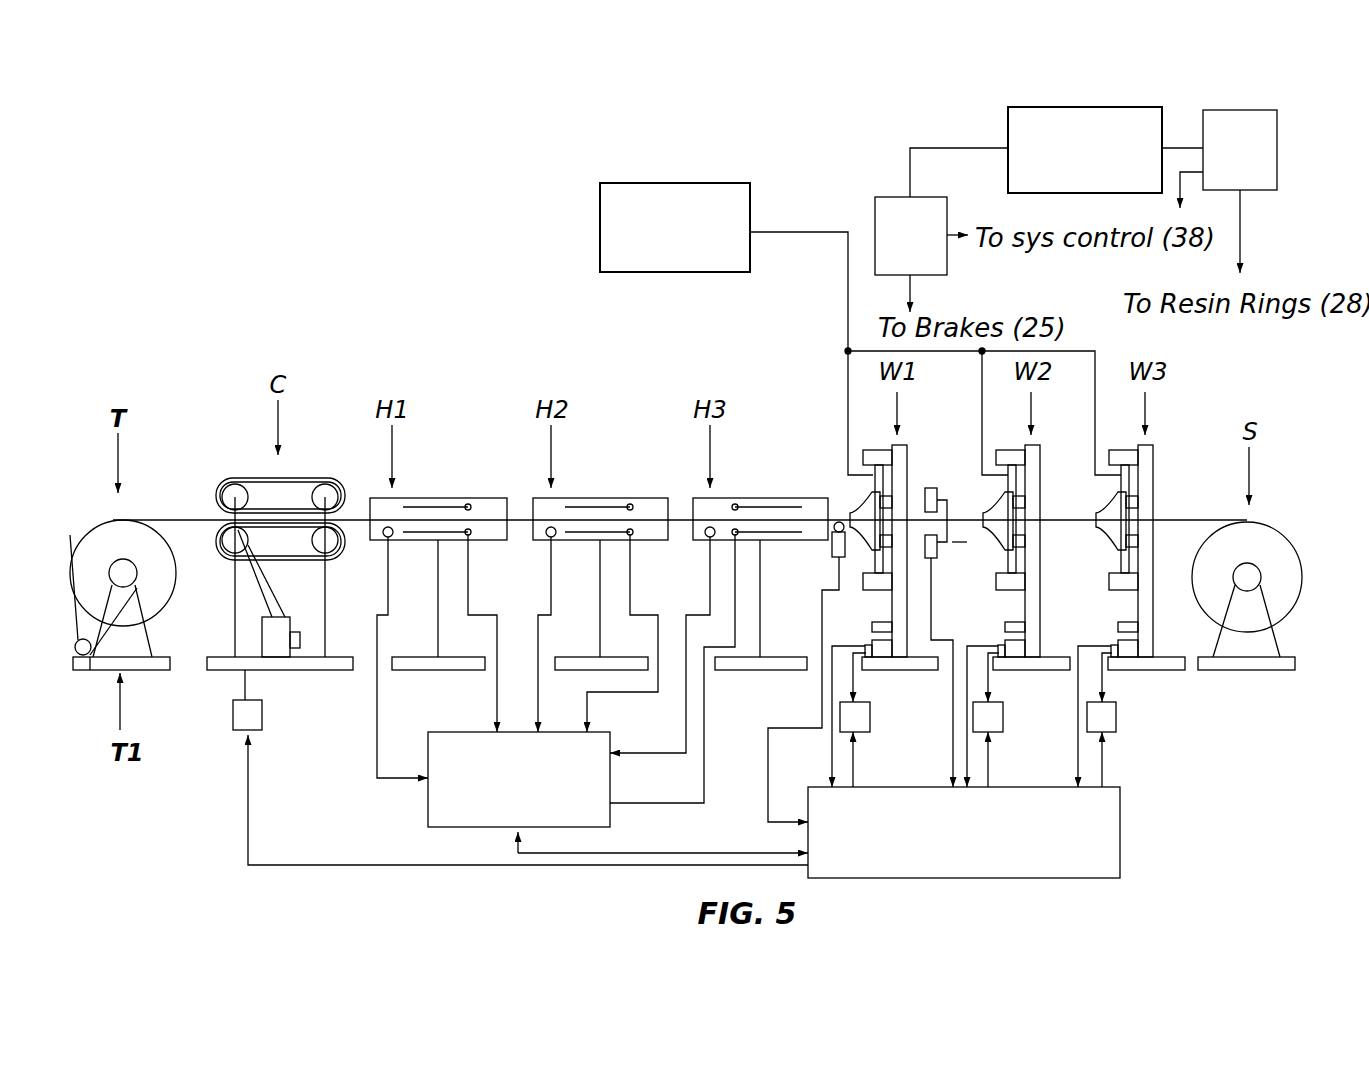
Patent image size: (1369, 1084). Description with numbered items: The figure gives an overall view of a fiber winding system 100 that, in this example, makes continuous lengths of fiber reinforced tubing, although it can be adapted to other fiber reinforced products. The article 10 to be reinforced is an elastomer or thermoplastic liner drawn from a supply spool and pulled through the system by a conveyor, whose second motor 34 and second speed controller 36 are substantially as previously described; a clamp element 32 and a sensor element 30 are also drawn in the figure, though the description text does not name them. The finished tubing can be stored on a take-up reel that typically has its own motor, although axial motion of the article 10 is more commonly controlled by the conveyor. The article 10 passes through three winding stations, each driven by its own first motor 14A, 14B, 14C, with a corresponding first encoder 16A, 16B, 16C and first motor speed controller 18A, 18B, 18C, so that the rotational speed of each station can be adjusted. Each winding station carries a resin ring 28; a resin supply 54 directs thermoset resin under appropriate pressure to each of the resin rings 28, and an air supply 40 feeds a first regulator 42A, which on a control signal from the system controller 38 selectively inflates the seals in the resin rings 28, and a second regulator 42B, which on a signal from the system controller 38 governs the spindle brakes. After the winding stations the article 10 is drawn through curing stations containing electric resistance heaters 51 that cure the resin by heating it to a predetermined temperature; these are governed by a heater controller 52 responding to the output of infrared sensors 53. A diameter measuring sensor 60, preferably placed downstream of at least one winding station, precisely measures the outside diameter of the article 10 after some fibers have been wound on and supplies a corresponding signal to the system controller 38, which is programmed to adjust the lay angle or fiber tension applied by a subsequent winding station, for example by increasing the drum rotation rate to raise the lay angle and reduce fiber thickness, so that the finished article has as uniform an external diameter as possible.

The system 100 is at (395, 240).
The article 10 is at (146, 519).
The resin rings 28 is at (862, 503).
The web sensor 30 is at (833, 550).
The clamp actuator 32 is at (290, 622).
The second motor 34 is at (300, 640).
The second speed controller 36 is at (262, 710).
The system controller 38 is at (1120, 832).
The air supply 40 is at (1088, 107).
The first regulator 42A is at (890, 197).
The second regulator 42B is at (1243, 110).
The electric resistance heaters 51 is at (432, 507).
The heater controller 52 is at (428, 806).
The infrared sensors 53 is at (385, 540).
The resin supply 54 is at (678, 183).
The diameter measuring sensor 60 is at (934, 487).
The first motor 14A is at (882, 620).
The first motor 14B is at (1013, 620).
The first motor 14C is at (1125, 620).
The first encoder 16A is at (870, 645).
The first encoder 16B is at (1000, 645).
The first encoder 16C is at (1112, 645).
The first motor speed controller 18A is at (870, 712).
The first motor speed controller 18B is at (1003, 712).
The first motor speed controller 18C is at (1116, 712).